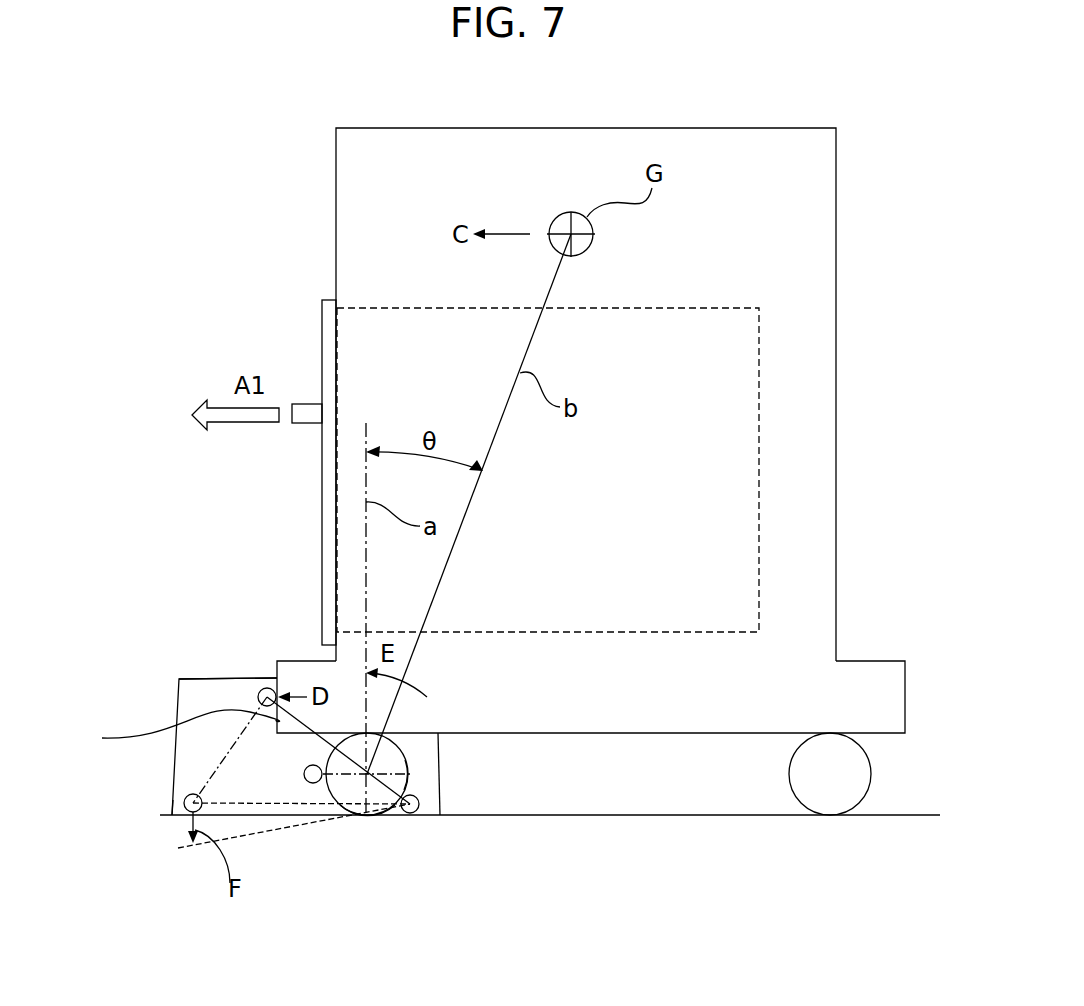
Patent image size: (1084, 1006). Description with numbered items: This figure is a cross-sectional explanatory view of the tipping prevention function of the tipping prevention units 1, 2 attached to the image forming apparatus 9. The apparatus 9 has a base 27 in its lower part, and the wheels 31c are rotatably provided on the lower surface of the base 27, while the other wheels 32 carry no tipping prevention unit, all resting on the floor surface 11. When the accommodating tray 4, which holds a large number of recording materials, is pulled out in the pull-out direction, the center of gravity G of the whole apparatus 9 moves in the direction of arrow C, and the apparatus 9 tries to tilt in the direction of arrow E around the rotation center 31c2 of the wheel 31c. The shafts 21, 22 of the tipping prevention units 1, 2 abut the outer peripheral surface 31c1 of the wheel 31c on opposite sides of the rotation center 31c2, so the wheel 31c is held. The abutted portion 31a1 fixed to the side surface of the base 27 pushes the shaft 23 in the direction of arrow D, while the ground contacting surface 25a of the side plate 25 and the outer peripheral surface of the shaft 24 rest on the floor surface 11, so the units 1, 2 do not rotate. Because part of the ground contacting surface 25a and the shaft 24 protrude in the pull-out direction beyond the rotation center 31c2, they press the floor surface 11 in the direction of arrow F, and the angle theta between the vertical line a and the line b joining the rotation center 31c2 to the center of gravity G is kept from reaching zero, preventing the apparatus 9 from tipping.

The tipping prevention unit 1 is at (222, 614).
The tipping prevention unit 2 is at (201, 672).
The accommodating tray 4 is at (328, 320).
The image forming apparatus 9 is at (840, 476).
The floor surface 11 is at (903, 815).
The shaft 21 is at (317, 783).
The shaft 22 is at (417, 813).
The shaft 23 is at (260, 687).
The shaft 24 is at (183, 800).
The side plate 25 is at (190, 697).
The ground contacting surface 25a is at (175, 817).
The base 27 is at (905, 686).
The abutted portion 31a1 is at (161, 731).
The wheel 31c is at (397, 758).
The outer peripheral surface 31c1 is at (408, 779).
The rotation center 31c2 is at (350, 817).
The wheel 32 is at (830, 790).